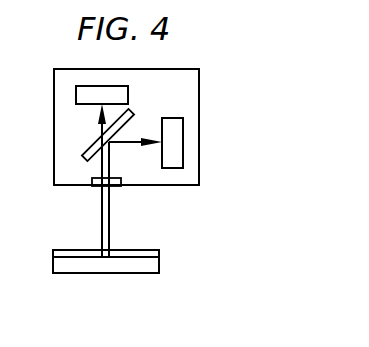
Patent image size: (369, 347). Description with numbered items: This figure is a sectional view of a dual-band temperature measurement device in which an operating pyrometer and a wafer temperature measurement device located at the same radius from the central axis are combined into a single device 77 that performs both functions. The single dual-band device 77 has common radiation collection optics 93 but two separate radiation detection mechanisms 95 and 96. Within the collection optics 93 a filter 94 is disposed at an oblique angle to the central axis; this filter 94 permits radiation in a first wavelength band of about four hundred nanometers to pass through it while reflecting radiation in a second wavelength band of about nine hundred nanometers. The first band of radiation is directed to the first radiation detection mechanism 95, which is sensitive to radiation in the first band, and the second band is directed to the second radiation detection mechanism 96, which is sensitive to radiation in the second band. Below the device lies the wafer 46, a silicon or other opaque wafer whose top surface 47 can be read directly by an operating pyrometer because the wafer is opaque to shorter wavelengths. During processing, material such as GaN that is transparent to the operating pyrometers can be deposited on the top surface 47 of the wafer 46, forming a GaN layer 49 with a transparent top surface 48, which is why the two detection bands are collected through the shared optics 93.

The single dual-band device 77 is at (199, 87).
The first radiation detection mechanism 95 is at (128, 97).
The filter 94 is at (82, 155).
The second radiation detection mechanism 96 is at (173, 118).
The common radiation collection optics 93 is at (100, 193).
The wafer 46 is at (158, 266).
The transparent top surface 48 is at (159, 252).
The top surface 47 is at (125, 255).
The GaN layer 49 is at (152, 249).